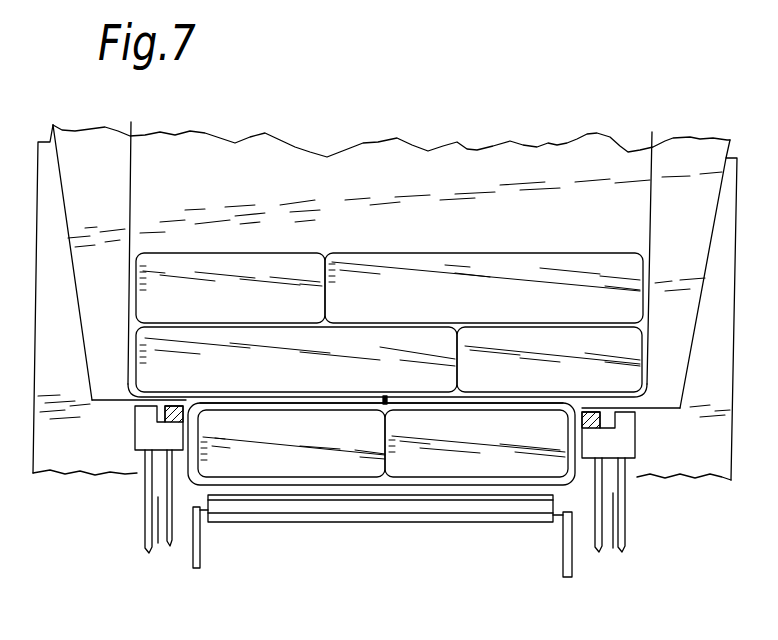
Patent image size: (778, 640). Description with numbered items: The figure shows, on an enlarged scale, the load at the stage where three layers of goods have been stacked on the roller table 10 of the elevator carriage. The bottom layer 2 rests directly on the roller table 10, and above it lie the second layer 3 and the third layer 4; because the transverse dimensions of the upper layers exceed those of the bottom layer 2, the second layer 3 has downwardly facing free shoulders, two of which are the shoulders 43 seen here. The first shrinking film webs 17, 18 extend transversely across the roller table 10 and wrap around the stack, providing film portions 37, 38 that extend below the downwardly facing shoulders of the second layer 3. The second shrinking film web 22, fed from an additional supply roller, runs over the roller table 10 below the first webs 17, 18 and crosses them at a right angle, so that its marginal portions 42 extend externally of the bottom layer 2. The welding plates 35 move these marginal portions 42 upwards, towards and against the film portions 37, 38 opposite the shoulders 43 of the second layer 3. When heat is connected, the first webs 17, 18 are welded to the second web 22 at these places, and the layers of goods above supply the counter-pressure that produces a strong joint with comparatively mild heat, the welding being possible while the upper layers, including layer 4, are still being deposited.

The bottom layer of goods 2 is at (284, 462).
The second layer of goods 3 is at (338, 360).
The third layer of goods 4 is at (514, 288).
The roller table 10 is at (467, 511).
The first shrinking film web 17 is at (130, 190).
The first shrinking film web 18 is at (648, 237).
The second shrinking film web 22 is at (275, 168).
The welding plate 35 is at (174, 414).
The film portion 37 is at (292, 397).
The film portion 38 is at (480, 402).
The marginal portion of second film web 42 is at (97, 412).
The downwardly facing shoulder 43 is at (148, 393).